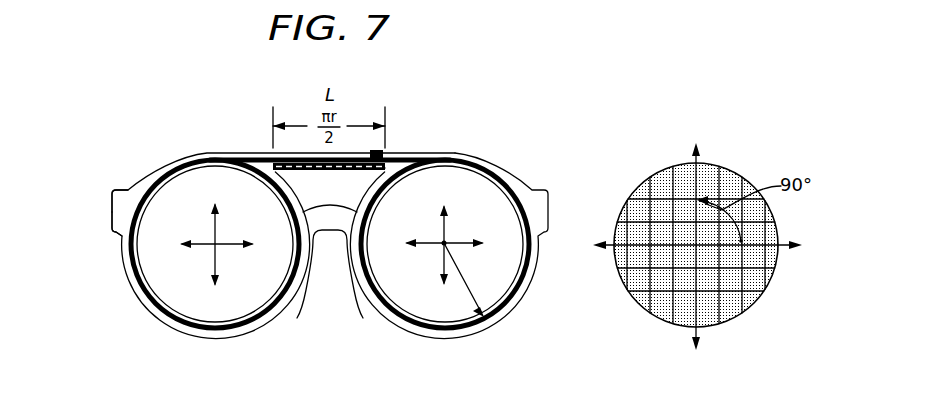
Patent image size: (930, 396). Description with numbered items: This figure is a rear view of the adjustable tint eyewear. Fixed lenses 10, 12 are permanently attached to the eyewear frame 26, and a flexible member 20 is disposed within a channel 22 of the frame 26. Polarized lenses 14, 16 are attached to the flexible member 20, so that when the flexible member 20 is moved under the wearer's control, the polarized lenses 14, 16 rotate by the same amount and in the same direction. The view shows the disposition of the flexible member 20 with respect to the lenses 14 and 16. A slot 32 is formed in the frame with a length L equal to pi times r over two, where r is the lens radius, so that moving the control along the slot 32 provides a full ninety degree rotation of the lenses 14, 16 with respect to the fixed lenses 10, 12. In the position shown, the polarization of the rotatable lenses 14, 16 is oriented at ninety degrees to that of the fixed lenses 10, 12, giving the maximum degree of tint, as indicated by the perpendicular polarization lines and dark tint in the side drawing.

The fixed lens 10 is at (212, 228).
The fixed lens 12 is at (440, 230).
The polarized lens 14 is at (146, 282).
The polarized lens 16 is at (428, 252).
The flexible member 20 is at (250, 330).
The channel 22 is at (135, 218).
The eyewear frame 26 is at (133, 195).
The slot 32 is at (277, 160).